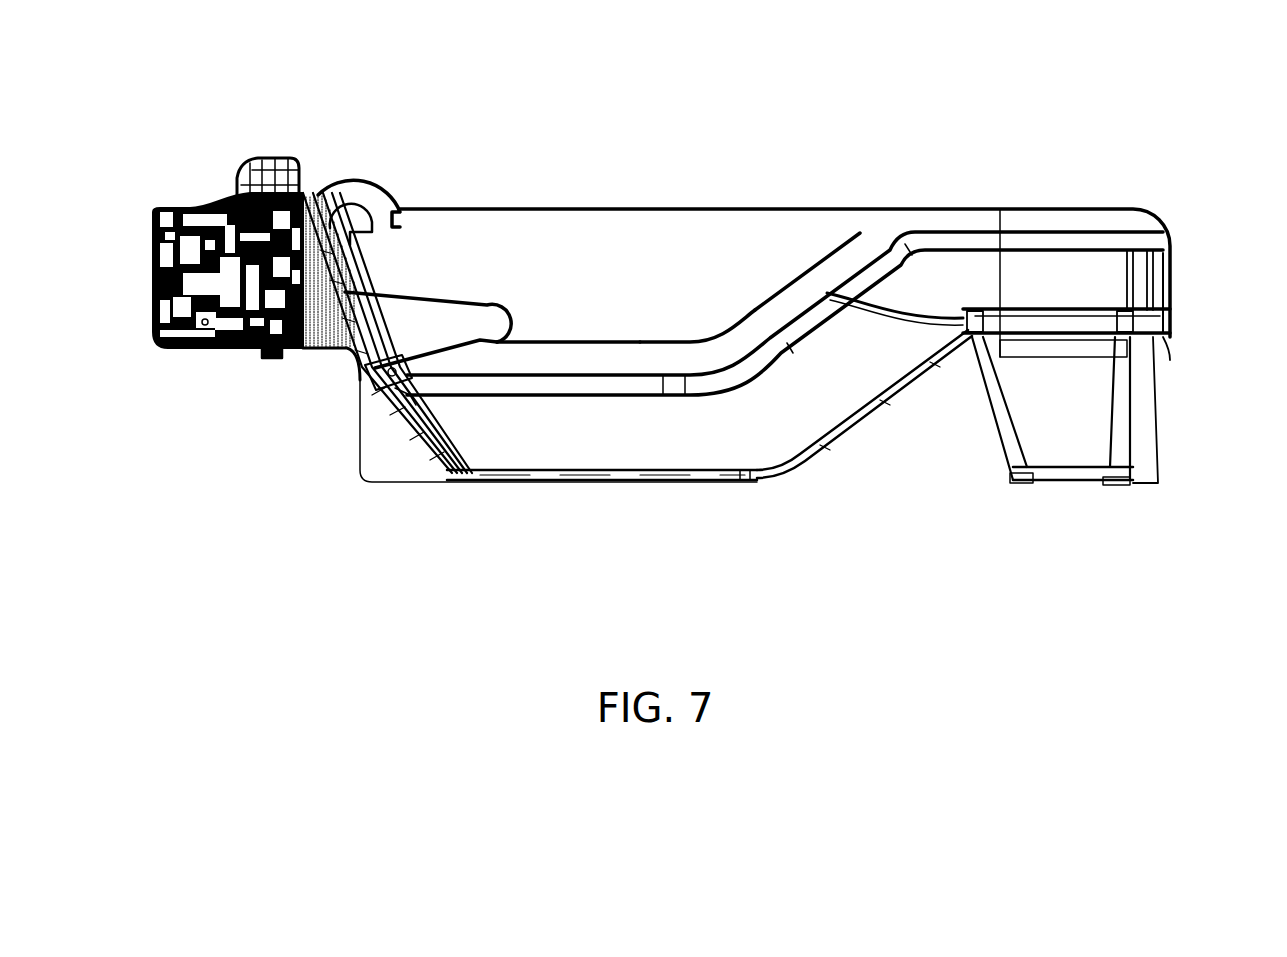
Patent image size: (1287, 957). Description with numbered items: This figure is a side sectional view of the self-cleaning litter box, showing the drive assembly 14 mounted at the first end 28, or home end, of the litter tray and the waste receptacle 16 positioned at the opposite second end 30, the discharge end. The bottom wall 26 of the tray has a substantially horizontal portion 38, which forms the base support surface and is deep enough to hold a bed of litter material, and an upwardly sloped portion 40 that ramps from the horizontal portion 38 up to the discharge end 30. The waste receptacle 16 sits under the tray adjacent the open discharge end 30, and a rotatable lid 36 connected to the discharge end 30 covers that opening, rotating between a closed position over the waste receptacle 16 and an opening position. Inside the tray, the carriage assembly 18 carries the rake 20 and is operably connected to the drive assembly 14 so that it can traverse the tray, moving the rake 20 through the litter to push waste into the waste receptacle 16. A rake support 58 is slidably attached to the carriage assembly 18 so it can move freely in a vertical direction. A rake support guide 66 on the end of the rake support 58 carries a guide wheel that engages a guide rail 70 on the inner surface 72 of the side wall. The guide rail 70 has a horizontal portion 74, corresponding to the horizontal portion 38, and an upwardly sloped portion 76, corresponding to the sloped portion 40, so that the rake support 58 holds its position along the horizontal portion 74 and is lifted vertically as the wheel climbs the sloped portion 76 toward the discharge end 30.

The drive assembly 14 is at (193, 190).
The waste receptacle 16 is at (1130, 418).
The carriage assembly 18 is at (340, 185).
The rake 20 is at (407, 377).
The bottom wall 26 is at (727, 487).
The first end 28 is at (276, 352).
The second end 30 is at (1037, 205).
The rotatable lid 36 is at (1123, 310).
The horizontal portion 38 is at (566, 493).
The upwardly sloped portion 40 is at (870, 418).
The rake support 58 is at (350, 263).
The rake support guide 66 is at (492, 305).
The guide rail 70 is at (695, 340).
The inner surface 72 is at (767, 247).
The horizontal portion 74 is at (597, 340).
The upwardly sloped portion 76 is at (827, 253).